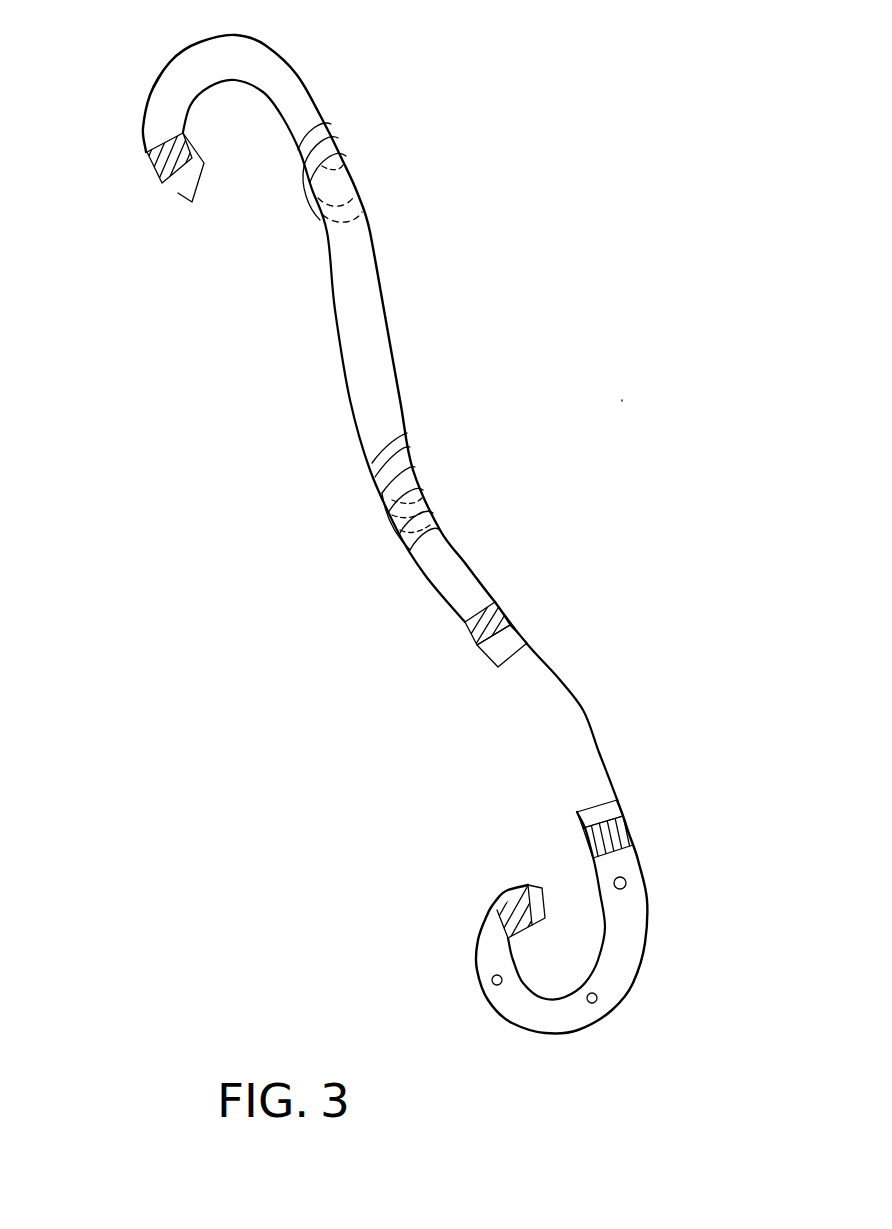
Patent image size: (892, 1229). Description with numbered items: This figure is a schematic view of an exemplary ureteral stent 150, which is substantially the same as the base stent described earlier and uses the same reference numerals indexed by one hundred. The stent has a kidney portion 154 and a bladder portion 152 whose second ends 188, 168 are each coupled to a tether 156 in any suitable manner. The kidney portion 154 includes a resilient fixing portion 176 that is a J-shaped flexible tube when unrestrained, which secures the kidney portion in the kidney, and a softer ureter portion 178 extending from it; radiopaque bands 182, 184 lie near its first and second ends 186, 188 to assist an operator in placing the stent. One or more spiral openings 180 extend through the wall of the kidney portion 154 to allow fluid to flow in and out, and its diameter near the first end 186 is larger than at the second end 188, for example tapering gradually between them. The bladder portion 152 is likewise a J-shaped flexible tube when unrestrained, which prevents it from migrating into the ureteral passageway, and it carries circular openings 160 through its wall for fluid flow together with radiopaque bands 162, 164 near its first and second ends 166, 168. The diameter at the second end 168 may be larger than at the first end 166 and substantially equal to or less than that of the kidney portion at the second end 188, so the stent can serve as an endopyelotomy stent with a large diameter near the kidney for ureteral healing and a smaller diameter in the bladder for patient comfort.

The ureteral stent 150 is at (620, 402).
The bladder portion 152 is at (656, 935).
The kidney portion 154 is at (399, 273).
The tether 156 is at (583, 710).
The circular openings 160 is at (598, 1003).
The radiopaque band 162 is at (503, 898).
The radiopaque band 164 is at (630, 830).
The first end of the bladder portion 166 is at (542, 886).
The second end of the bladder portion 168 is at (618, 802).
The fixing portion 176 is at (162, 77).
The ureter portion 178 is at (400, 395).
The spiral openings 180 is at (340, 148).
The radiopaque band 182 is at (147, 163).
The radiopaque band 184 is at (470, 632).
The first end of the kidney portion 186 is at (178, 197).
The second end of the kidney portion 188 is at (483, 660).